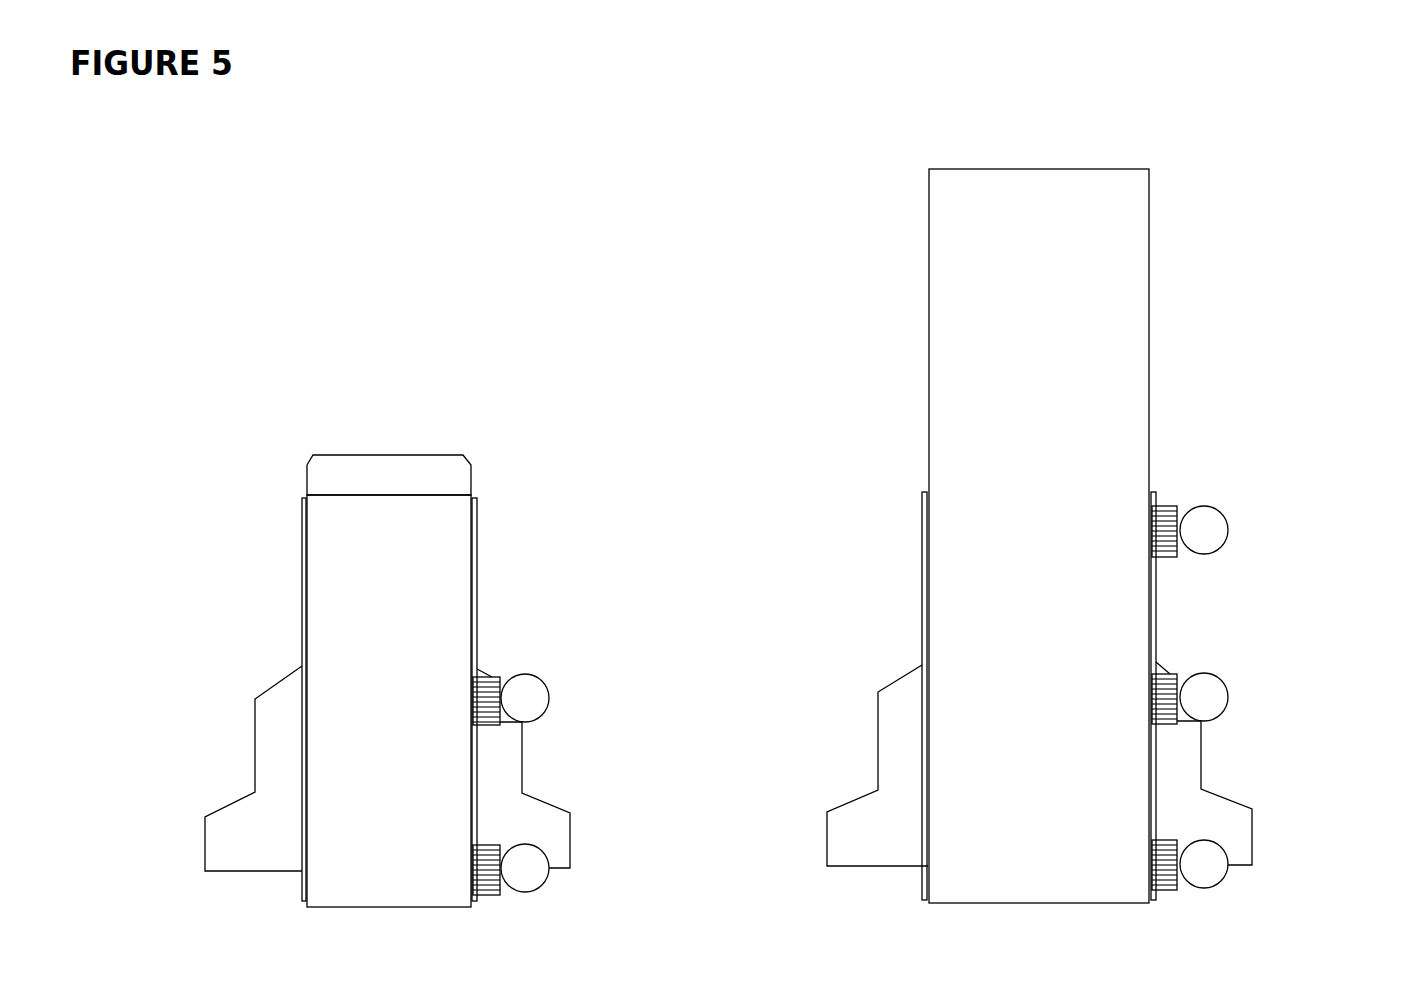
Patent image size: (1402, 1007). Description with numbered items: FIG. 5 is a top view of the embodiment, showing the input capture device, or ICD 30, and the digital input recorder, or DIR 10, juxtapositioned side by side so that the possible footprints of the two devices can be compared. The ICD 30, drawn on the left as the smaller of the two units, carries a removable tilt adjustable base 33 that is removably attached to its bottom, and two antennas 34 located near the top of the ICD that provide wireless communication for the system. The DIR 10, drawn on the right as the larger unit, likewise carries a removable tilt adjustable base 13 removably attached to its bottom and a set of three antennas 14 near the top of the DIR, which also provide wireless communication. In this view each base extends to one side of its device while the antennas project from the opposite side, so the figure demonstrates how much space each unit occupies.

The input capture device 30 is at (512, 430).
The removable tilt adjustable base 13 is at (272, 758).
The antennas 34 is at (537, 868).
The digital input recorder 10 is at (1195, 407).
The removable tilt adjustable base 33 is at (895, 758).
The antennas 14 is at (1207, 857).